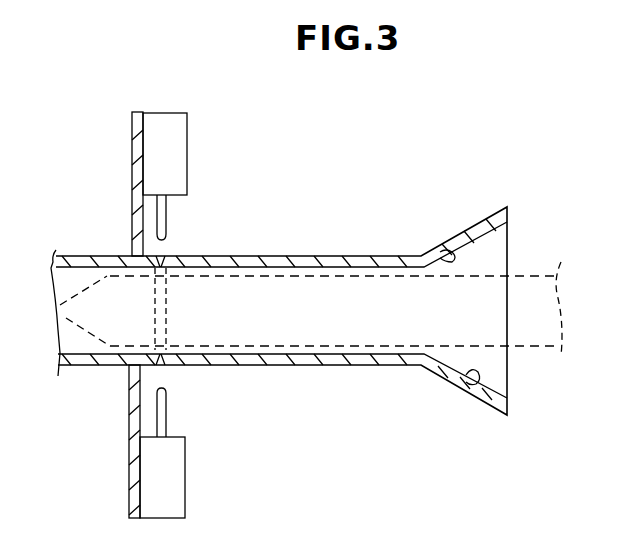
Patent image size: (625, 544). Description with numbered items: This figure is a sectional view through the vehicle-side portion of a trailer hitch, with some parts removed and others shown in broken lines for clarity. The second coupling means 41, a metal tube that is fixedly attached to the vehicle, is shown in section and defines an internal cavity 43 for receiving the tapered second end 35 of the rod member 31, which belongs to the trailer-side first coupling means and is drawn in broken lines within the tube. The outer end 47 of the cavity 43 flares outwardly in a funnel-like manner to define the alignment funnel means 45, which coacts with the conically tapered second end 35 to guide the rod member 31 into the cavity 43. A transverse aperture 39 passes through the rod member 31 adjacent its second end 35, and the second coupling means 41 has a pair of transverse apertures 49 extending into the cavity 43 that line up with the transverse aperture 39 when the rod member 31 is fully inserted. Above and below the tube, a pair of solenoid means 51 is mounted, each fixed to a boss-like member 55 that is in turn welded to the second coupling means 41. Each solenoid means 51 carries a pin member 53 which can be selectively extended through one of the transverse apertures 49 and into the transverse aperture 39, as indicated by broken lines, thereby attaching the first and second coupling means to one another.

The rod member 31 is at (537, 350).
The second end 35 is at (83, 290).
The transverse aperture 39 is at (188, 276).
The second coupling means 41 is at (313, 257).
The cavity 43 is at (313, 354).
The alignment funnel means 45 is at (477, 222).
The outer end 47 is at (444, 252).
The transverse apertures 49 is at (160, 256).
The solenoid means 51 is at (190, 150).
The pin member 53 is at (165, 218).
The boss-like member 55 is at (133, 218).